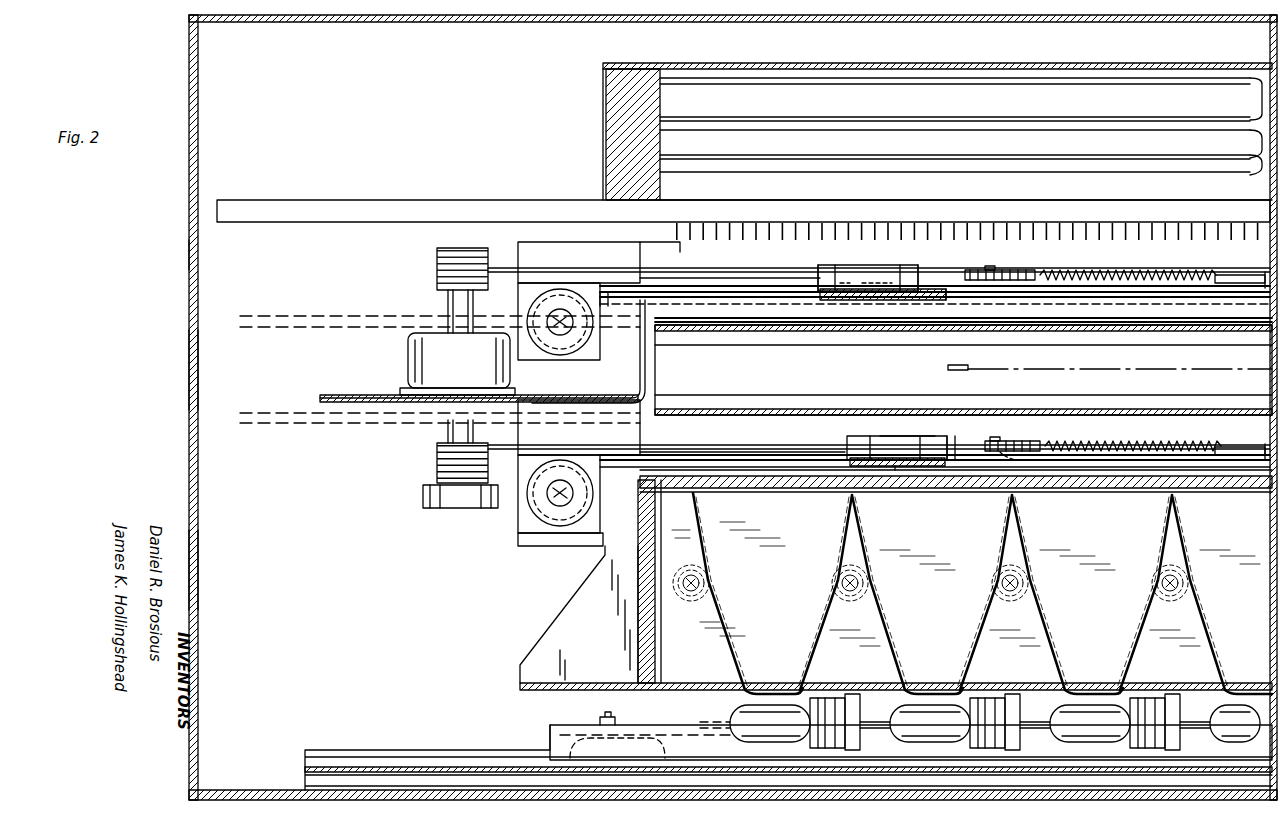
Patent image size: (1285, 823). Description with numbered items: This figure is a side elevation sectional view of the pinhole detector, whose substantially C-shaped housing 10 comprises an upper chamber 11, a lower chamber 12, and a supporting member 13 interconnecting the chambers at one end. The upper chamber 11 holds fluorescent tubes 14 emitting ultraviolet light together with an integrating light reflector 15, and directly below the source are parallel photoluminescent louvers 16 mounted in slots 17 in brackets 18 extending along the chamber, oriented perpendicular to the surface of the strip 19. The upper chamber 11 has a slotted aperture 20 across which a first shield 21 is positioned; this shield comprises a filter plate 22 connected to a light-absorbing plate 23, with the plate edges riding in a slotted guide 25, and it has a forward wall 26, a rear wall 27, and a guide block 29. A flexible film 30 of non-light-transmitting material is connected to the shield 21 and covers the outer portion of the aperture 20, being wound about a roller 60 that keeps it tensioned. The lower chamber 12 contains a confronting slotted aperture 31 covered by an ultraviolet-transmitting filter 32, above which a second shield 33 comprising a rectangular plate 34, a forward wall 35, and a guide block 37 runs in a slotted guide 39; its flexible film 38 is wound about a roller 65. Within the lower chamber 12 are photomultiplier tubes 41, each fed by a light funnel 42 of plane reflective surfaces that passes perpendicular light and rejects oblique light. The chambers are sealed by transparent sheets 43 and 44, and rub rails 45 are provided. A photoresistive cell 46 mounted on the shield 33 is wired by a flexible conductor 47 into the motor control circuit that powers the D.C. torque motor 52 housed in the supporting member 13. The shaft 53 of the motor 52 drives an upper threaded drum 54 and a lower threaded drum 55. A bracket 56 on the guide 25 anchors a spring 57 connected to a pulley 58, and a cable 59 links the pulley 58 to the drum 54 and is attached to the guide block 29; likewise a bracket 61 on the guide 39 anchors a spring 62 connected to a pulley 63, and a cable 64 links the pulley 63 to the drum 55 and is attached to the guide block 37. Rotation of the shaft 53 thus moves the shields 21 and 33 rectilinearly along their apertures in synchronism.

The housing 10 is at (125, 334).
The upper chamber 11 is at (189, 172).
The lower chamber 12 is at (189, 570).
The supporting member 13 is at (205, 368).
The fluorescent tubes 14 is at (660, 128).
The integrating light reflector 15 is at (790, 63).
The photoluminescent louvers 16 is at (810, 232).
The slots 17 is at (685, 246).
The brackets 18 is at (640, 244).
The strip 19 is at (948, 367).
The slotted aperture 20 is at (812, 352).
The first shield 21 is at (881, 282).
The filter plate 22 is at (866, 300).
The plate 23 is at (946, 298).
The slotted guide 25 is at (604, 306).
The forward wall 26 is at (918, 270).
The rear wall 27 is at (820, 268).
The guide block 29 is at (818, 278).
The flexible film 30 is at (738, 295).
The slotted aperture 31 is at (916, 494).
The ultraviolet-transmitting filter 32 is at (990, 492).
The second shield 33 is at (897, 451).
The rectangular plate 34 is at (898, 470).
The forward wall 35 is at (992, 446).
The guide block 37 is at (845, 450).
The flexible film 38 is at (788, 462).
The slotted guide 39 is at (616, 452).
The photomultiplier tubes 41 is at (788, 635).
The light funnel 42 is at (972, 593).
The sheet of transparent material 43 is at (884, 330).
The sheet of transparent material 44 is at (900, 410).
The rub rails 45 is at (762, 345).
The photoresistive cell 46 is at (952, 444).
The flexible conductor 47 is at (885, 440).
The D.C. torque motor 52 is at (457, 364).
The shaft 53 is at (450, 300).
The upper threaded drum 54 is at (437, 262).
The lower threaded drum 55 is at (437, 462).
The bracket 56 is at (1244, 274).
The spring 57 is at (1214, 276).
The pulley 58 is at (1032, 272).
The cable 59 is at (590, 276).
The roller 60 is at (590, 336).
The bracket 61 is at (1246, 446).
The spring 62 is at (1214, 447).
The pulley 63 is at (1028, 444).
The cable 64 is at (540, 452).
The roller 65 is at (532, 508).